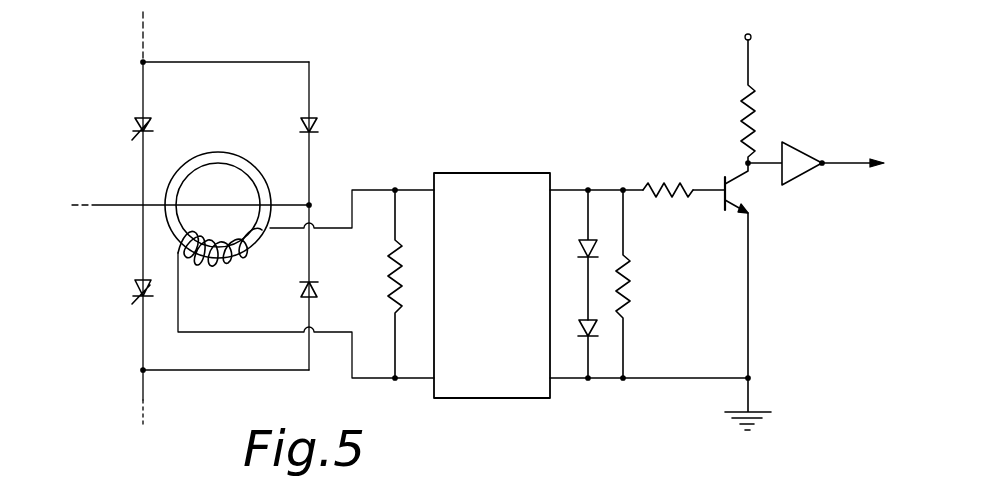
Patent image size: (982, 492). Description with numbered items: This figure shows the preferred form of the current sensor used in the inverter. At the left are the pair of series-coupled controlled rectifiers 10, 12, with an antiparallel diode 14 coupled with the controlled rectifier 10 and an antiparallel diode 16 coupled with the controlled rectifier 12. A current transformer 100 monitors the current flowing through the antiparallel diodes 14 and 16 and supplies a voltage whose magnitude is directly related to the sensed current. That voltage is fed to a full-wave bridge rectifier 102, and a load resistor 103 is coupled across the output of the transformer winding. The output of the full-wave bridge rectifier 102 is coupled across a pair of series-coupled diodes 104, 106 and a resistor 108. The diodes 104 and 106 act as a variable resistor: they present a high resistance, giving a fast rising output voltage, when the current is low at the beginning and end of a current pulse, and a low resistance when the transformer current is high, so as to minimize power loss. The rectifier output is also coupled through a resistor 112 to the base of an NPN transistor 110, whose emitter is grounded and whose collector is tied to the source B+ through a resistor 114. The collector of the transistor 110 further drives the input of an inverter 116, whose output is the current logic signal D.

The controlled rectifier 10 is at (136, 122).
The controlled rectifier 12 is at (134, 286).
The antiparallel diode 14 is at (316, 123).
The antiparallel diode 16 is at (300, 293).
The current transformer 100 is at (230, 162).
The full-wave bridge rectifier 102 is at (477, 388).
The load resistor 103 is at (390, 274).
The diode 104 is at (572, 250).
The diode 106 is at (584, 344).
The resistor 108 is at (627, 301).
The NPN transistor 110 is at (722, 202).
The resistor 112 is at (662, 184).
The resistor 114 is at (756, 100).
The inverter 116 is at (805, 173).